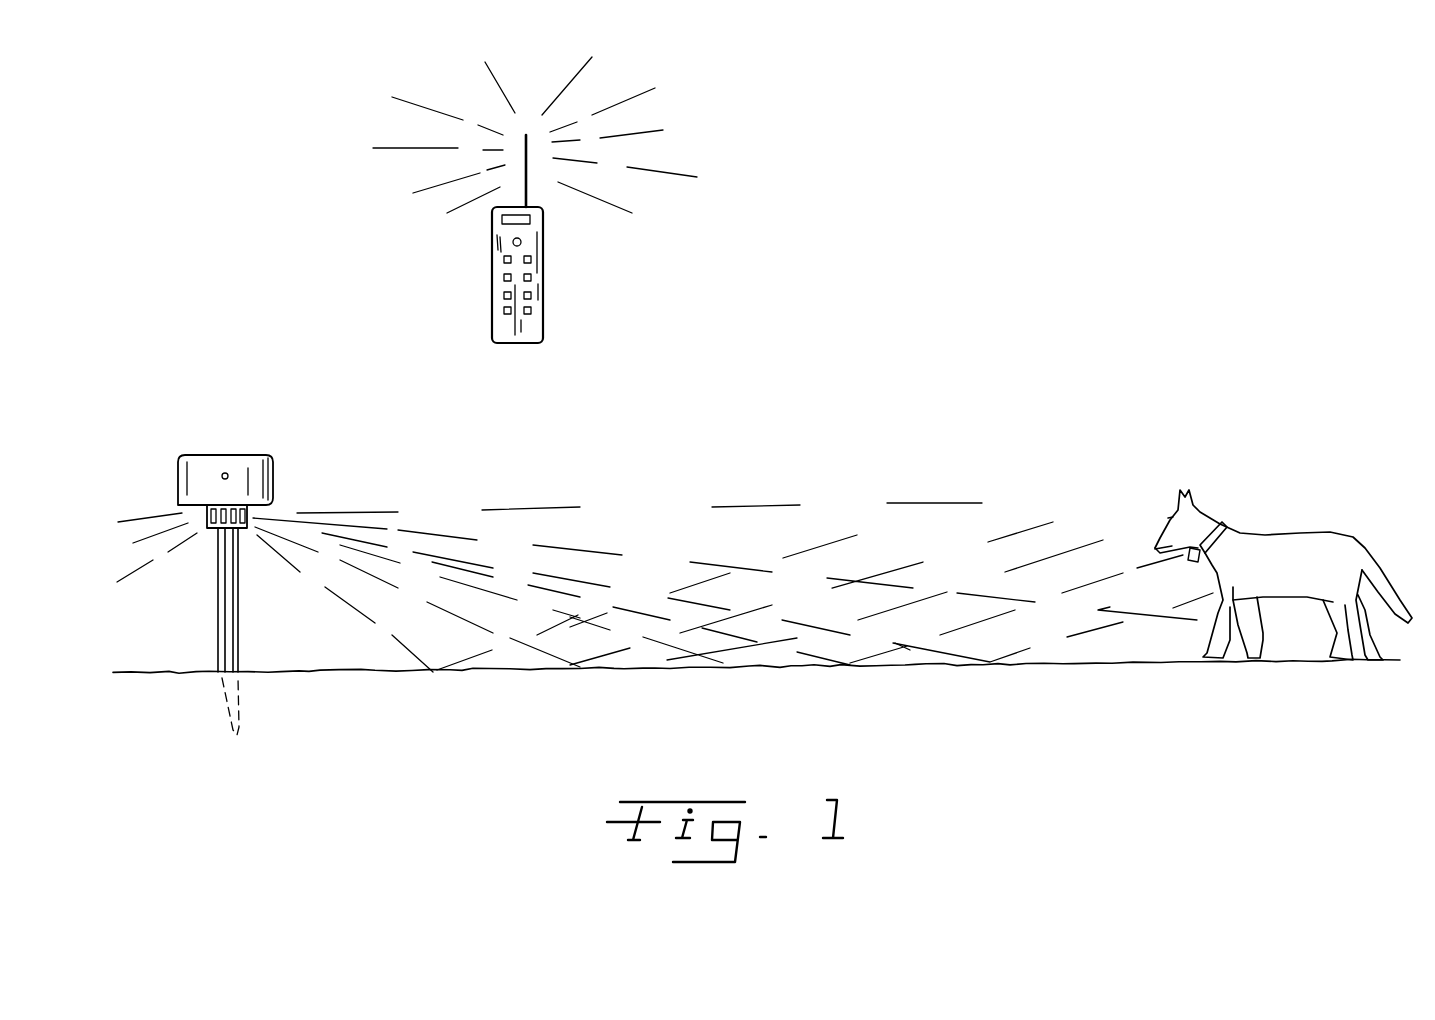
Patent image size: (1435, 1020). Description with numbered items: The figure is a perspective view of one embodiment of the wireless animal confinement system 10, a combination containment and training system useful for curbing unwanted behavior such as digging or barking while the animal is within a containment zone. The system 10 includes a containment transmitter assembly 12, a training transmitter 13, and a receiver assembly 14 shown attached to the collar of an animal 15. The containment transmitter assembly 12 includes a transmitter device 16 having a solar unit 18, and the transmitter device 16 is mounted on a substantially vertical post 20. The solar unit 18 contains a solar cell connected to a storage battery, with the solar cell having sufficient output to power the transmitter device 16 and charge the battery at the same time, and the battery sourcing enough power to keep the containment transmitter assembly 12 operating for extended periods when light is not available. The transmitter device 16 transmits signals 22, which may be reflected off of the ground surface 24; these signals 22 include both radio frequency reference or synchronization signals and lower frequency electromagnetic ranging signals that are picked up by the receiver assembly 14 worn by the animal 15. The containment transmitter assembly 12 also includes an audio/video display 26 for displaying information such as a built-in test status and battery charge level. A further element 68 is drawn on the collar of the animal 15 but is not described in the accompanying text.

The wireless animal confinement system 10 is at (412, 722).
The containment transmitter assembly 12 is at (310, 420).
The training transmitter 13 is at (540, 270).
The receiver assembly 14 is at (1274, 533).
The animal 15 is at (1295, 533).
The transmitter device 16 is at (200, 432).
The solar unit 18 is at (232, 440).
The post 20 is at (222, 592).
The signals 22 is at (593, 550).
The ground surface 24 is at (355, 670).
The audio/video display 26 is at (247, 513).
The receiver 68 is at (1190, 560).